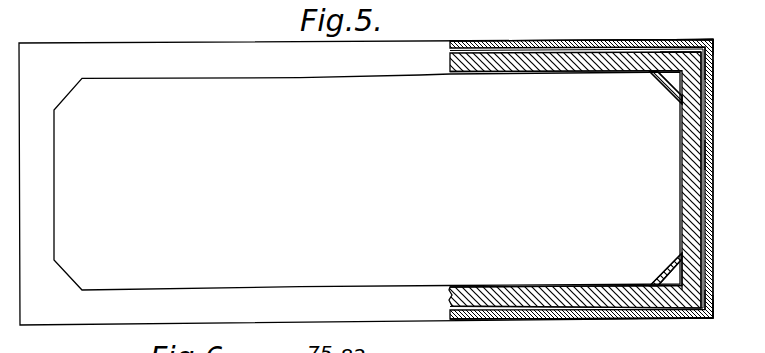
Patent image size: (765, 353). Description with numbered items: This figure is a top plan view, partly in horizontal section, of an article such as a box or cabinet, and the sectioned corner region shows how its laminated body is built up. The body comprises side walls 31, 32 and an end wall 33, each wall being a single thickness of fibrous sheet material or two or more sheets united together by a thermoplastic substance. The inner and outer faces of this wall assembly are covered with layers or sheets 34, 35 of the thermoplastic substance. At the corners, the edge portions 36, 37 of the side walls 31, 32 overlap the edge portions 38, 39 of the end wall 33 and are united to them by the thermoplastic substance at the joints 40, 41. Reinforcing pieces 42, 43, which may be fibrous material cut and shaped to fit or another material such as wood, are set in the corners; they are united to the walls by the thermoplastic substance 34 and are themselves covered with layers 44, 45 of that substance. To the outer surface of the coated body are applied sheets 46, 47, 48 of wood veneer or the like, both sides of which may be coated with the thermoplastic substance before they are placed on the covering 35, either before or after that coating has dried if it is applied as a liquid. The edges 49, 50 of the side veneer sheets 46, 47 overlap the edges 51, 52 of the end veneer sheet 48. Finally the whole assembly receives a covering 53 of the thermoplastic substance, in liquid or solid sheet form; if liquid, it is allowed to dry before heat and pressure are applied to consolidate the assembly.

The side wall 31 is at (547, 67).
The side wall 32 is at (481, 295).
The end wall 33 is at (694, 177).
The inner layer of thermoplastic substance 34 is at (599, 72).
The outer layer of thermoplastic substance 35 is at (597, 50).
The edge portion of side wall 36 is at (688, 60).
The edge portion of side wall 37 is at (694, 320).
The edge portion of end wall 38 is at (713, 80).
The edge portion of end wall 39 is at (690, 278).
The joint 40 is at (714, 41).
The joint 41 is at (710, 297).
The reinforcing piece 42 is at (667, 96).
The reinforcing piece 43 is at (676, 262).
The layer of thermoplastic substance 44 is at (662, 75).
The layer of thermoplastic substance 45 is at (656, 286).
The veneer sheet 46 is at (507, 47).
The veneer sheet 47 is at (515, 312).
The veneer sheet 48 is at (710, 153).
The edge of veneer sheet 49 is at (705, 41).
The edge of veneer sheet 50 is at (713, 318).
The edge of veneer sheet 51 is at (705, 66).
The edge of veneer sheet 52 is at (713, 303).
The covering of thermoplastic substance 53 is at (557, 48).